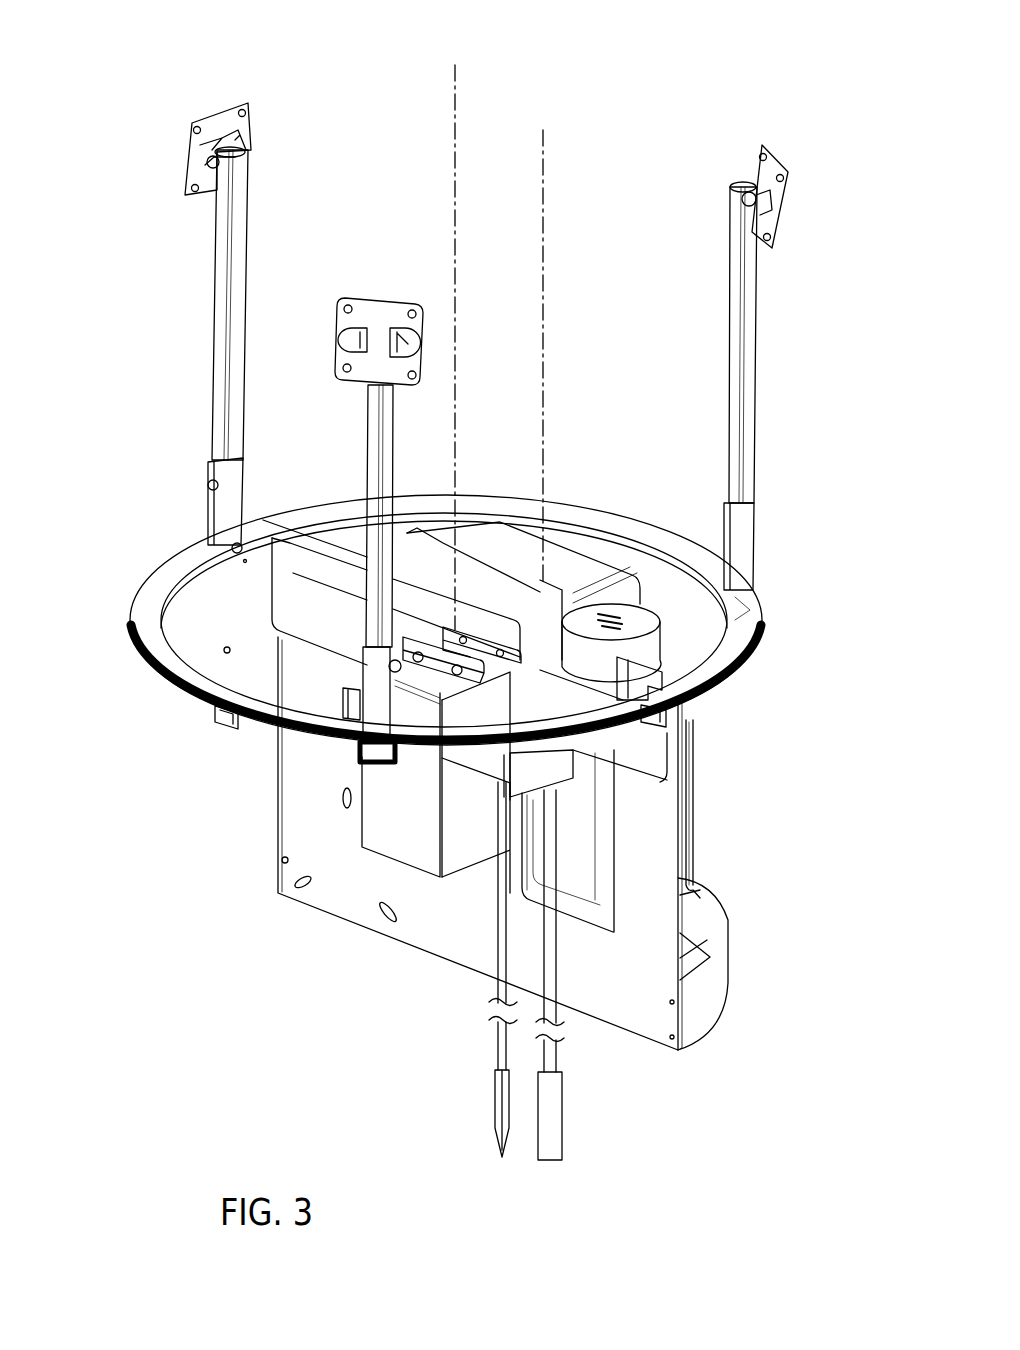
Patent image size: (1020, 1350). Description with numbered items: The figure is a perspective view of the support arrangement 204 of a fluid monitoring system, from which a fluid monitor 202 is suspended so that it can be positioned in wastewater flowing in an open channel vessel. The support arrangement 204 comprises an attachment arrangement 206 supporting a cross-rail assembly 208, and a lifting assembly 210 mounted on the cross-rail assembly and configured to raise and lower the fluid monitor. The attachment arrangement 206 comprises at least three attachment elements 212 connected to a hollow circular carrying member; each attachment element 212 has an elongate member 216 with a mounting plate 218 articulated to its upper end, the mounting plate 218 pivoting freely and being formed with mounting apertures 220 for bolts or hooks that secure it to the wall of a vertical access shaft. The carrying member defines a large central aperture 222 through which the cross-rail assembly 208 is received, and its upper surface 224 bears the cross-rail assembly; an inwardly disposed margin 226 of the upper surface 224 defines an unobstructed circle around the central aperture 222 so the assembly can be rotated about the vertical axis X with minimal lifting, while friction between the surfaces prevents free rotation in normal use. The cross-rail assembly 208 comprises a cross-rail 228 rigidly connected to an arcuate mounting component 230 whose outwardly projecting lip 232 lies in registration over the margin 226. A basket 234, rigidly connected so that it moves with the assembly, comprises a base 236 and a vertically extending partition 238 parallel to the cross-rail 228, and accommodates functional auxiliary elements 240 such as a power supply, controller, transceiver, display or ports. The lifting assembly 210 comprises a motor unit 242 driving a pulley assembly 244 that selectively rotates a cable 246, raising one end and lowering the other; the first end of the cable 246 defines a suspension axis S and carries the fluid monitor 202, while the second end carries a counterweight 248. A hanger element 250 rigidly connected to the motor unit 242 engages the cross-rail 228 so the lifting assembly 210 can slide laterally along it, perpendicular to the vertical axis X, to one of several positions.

The fluid monitor 202 is at (495, 1100).
The support arrangement 204 is at (690, 95).
The attachment arrangement 206 is at (397, 640).
The cross-rail assembly 208 is at (752, 770).
The lifting assembly 210 is at (385, 860).
The attachment element 212 is at (480, 421).
The elongate member 216 is at (240, 257).
The mounting plate 218 is at (342, 317).
The mounting aperture 220 is at (343, 366).
The central aperture 222 is at (225, 652).
The upper surface 224 is at (143, 600).
The inwardly disposed margin 226 is at (165, 617).
The cross-rail 228 is at (652, 753).
The arcuate mounting component 230 is at (672, 580).
The outwardly projecting lip 232 is at (745, 615).
The basket 234 is at (773, 969).
The base 236 is at (690, 1020).
The vertically extending partition 238 is at (633, 1012).
The functional auxiliary element 240 is at (630, 613).
The motor unit 242 is at (382, 815).
The pulley assembly 244 is at (498, 785).
The cable 246 is at (548, 792).
The counterweight 248 is at (548, 1118).
The hanger element 250 is at (478, 578).
The suspension axis S is at (543, 300).
The vertical axis X is at (457, 365).